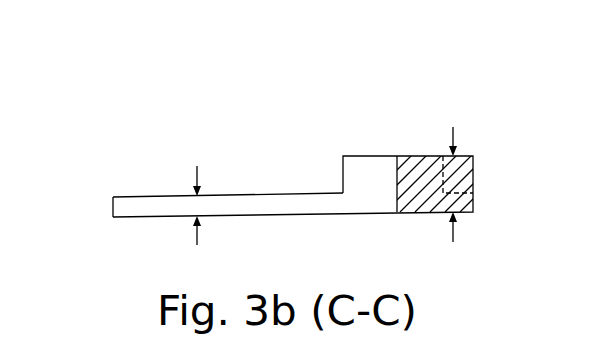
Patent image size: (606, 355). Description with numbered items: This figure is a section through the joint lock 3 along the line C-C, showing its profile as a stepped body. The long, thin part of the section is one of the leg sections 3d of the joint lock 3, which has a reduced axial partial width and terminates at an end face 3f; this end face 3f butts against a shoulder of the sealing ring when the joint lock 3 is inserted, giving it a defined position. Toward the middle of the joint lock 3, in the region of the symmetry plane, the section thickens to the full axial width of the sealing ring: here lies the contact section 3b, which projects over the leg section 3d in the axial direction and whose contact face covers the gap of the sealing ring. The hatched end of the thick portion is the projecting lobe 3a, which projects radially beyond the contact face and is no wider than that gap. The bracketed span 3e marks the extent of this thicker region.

The joint lock 3 is at (483, 108).
The projecting lobe 3a is at (463, 176).
The contact section 3b is at (393, 173).
The leg section 3d is at (162, 207).
The step region 3e is at (343, 223).
The end face 3f is at (113, 207).